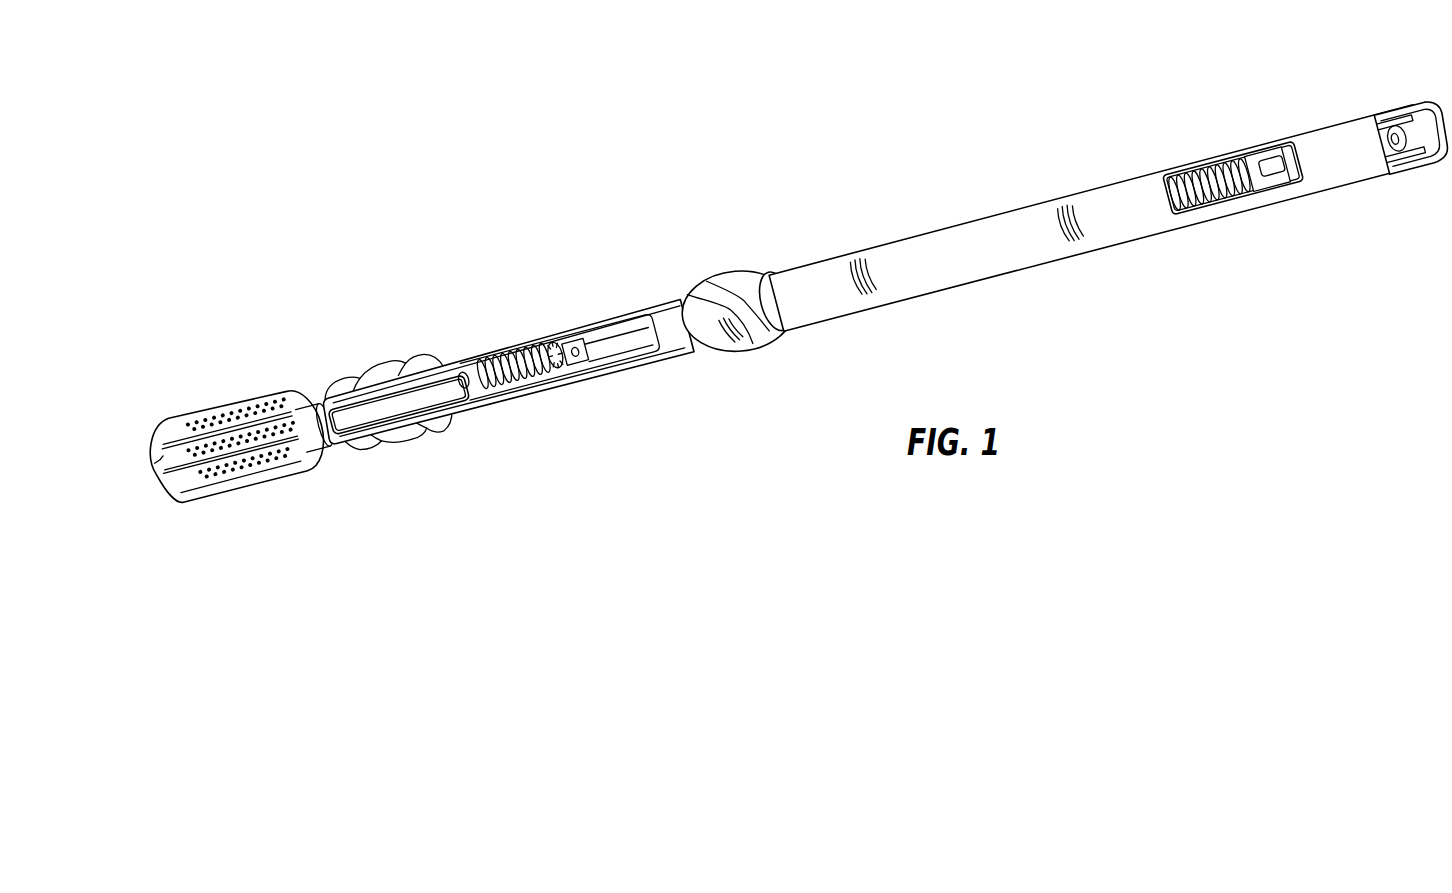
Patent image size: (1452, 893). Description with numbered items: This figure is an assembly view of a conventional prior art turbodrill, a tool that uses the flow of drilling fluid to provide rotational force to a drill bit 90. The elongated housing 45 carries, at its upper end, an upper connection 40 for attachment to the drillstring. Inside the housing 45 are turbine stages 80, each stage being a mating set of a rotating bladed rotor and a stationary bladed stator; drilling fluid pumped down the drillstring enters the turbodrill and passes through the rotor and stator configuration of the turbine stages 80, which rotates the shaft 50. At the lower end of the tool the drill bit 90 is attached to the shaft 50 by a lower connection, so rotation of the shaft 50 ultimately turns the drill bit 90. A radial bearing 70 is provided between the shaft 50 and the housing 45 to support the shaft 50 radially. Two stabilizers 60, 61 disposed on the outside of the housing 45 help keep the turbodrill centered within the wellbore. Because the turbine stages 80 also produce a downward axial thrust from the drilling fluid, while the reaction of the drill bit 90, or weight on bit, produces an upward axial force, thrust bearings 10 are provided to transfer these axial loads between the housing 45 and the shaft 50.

The thrust bearings 10 is at (522, 412).
The upper connection 40 is at (1398, 106).
The housing 45 is at (958, 222).
The shaft 50 is at (598, 365).
The stabilizer 60 is at (707, 262).
The stabilizer 61 is at (385, 357).
The radial bearing 70 is at (364, 386).
The turbine stages 80 is at (1232, 232).
The drill bit 90 is at (238, 500).